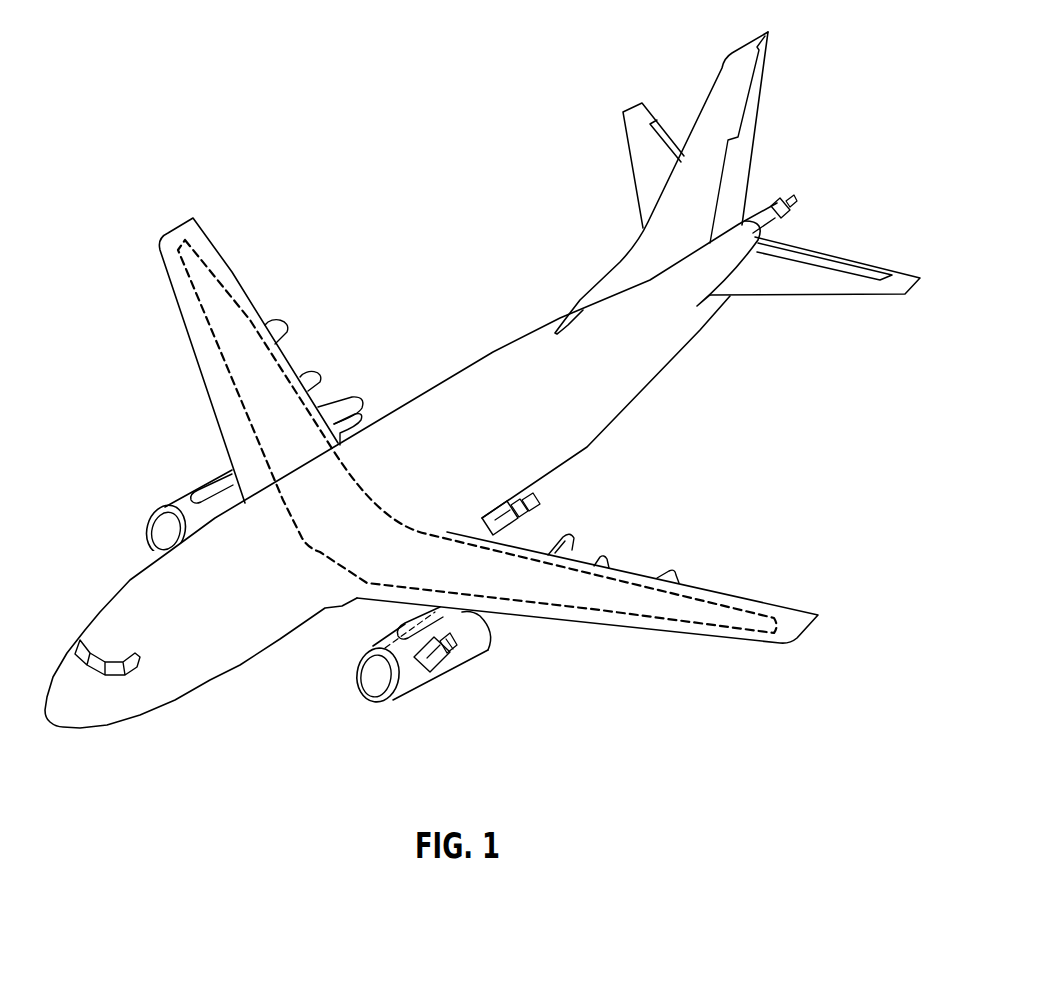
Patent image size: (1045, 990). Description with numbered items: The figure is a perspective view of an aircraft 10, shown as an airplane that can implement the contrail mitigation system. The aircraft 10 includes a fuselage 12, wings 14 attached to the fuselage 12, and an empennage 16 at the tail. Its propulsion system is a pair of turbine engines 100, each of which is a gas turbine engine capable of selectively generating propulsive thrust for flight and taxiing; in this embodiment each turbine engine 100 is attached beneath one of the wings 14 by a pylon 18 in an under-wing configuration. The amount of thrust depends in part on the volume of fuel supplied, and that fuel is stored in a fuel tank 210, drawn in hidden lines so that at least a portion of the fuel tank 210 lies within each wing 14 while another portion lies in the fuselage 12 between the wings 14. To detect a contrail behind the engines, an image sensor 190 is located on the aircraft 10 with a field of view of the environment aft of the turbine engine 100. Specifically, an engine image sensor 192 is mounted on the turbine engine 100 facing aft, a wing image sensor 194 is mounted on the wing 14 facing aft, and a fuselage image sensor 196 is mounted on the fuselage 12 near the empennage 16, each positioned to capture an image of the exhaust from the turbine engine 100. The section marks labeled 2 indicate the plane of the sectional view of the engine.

The aircraft 10 is at (487, 388).
The fuselage 12 is at (537, 452).
The wings 14 is at (176, 271).
The empennage 16 is at (766, 163).
The pylon 18 is at (470, 643).
The turbine engines 100 is at (297, 600).
The image sensor 190 is at (647, 448).
The engine image sensor 192 is at (452, 660).
The wing image sensor 194 is at (506, 502).
The fuselage image sensor 196 is at (789, 206).
The fuel tank 210 is at (637, 566).
The section line 2- 2 is at (446, 590).